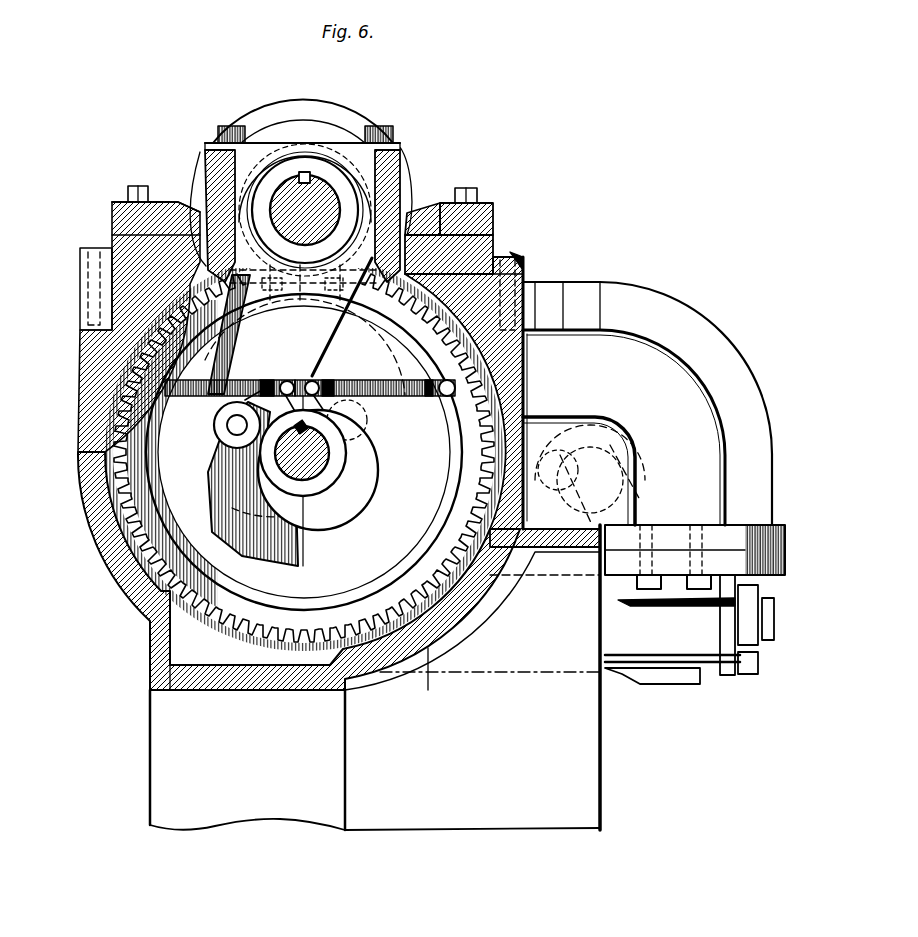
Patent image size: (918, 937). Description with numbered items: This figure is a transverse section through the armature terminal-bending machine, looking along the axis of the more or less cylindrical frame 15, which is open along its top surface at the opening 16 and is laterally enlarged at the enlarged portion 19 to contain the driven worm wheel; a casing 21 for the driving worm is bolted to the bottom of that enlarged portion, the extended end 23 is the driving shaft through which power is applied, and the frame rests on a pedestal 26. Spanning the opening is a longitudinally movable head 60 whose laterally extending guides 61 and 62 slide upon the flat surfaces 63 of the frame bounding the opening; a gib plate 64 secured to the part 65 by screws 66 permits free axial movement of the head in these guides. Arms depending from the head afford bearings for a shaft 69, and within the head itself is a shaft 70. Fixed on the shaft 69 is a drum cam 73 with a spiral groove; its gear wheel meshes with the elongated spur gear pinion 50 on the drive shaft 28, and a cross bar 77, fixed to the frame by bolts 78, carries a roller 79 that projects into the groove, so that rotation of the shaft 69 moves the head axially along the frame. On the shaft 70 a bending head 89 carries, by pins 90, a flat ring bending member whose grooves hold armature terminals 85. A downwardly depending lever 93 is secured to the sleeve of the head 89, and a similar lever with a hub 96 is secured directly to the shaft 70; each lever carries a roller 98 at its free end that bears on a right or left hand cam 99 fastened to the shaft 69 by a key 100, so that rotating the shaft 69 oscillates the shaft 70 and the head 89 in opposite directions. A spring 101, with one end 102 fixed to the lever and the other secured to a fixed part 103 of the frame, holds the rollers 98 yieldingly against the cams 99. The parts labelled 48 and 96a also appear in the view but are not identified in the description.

The frame 15 is at (100, 560).
The opening 16 is at (412, 212).
The laterally enlarged portion 19 is at (688, 312).
The casing 21 is at (707, 664).
The driving shaft 23 is at (772, 606).
The pedestal 26 is at (603, 779).
The drive shaft 28 is at (636, 436).
The roller 48 is at (214, 441).
The spur gear pinion 50 is at (598, 418).
The head 60 is at (410, 176).
The guide 61 is at (195, 240).
The guide 62 is at (492, 213).
The flat surfaces 63 is at (150, 294).
The gib plate 64 is at (112, 212).
The part 65 is at (115, 252).
The screws 66 is at (135, 188).
The shaft 69 is at (325, 459).
The shaft 70 is at (393, 148).
The drum cam 73 is at (160, 592).
The cross bar 77 is at (525, 284).
The bolts 78 is at (505, 255).
The roller 79 is at (238, 300).
The armature terminals 85 is at (242, 357).
The head 89 is at (289, 101).
The pins 90 is at (376, 389).
The lever 93 is at (372, 342).
The hub 96 is at (331, 192).
The key 96a is at (306, 175).
The rollers 98 is at (384, 431).
The cams 99 is at (232, 477).
The key 100 is at (350, 458).
The spring 101 is at (350, 368).
The spring end 102 is at (312, 365).
The fixed part 103 is at (478, 396).